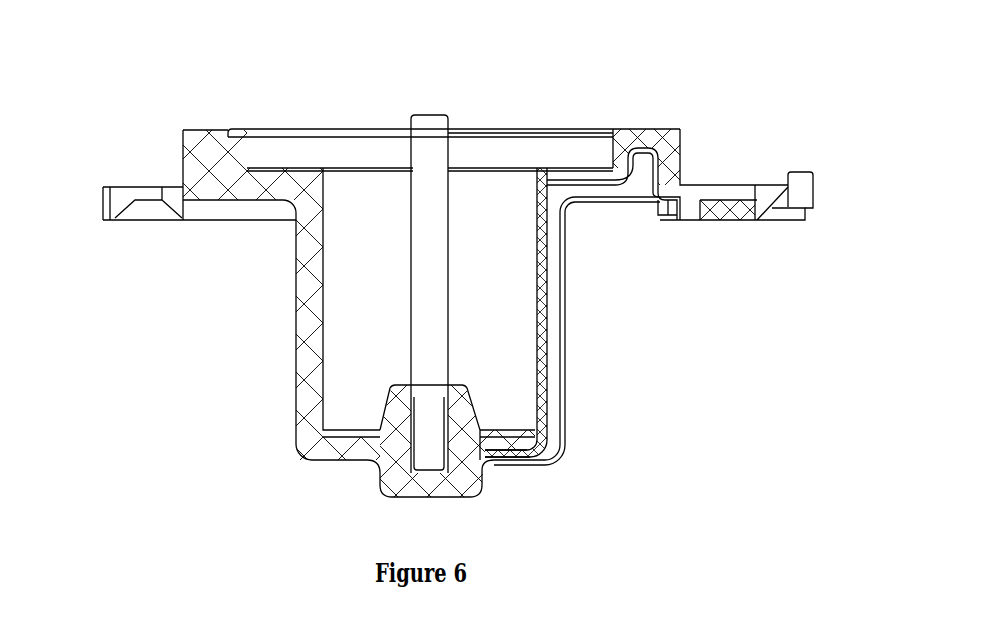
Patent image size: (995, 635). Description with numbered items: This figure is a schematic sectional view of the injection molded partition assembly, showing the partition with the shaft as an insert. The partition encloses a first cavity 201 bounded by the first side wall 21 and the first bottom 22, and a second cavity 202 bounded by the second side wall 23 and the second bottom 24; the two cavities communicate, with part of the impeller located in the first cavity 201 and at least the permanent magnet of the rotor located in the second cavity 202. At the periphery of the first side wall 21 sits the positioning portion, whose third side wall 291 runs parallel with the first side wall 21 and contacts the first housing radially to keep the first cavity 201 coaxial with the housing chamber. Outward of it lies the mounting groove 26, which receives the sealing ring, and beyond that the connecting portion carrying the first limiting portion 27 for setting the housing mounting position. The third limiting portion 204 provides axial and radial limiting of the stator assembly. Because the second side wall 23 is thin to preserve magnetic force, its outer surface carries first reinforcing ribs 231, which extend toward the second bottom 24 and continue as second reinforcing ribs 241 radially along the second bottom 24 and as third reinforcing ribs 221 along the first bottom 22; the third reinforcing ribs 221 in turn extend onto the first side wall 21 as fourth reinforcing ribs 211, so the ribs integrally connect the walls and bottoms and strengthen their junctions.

The first cavity 201 is at (283, 153).
The third side wall 291 is at (182, 155).
The second cavity 202 is at (487, 250).
The first bottom 22 is at (637, 246).
The third reinforcing rib 221 is at (607, 197).
The first side wall 21 is at (632, 152).
The fourth reinforcing rib 211 is at (636, 163).
The third limiting portion 204 is at (673, 213).
The mounting groove 26 is at (762, 151).
The first limiting portion 27 is at (798, 178).
The second side wall 23 is at (610, 355).
The first reinforcing rib 231 is at (557, 345).
The second bottom 24 is at (537, 453).
The second reinforcing rib 241 is at (503, 457).